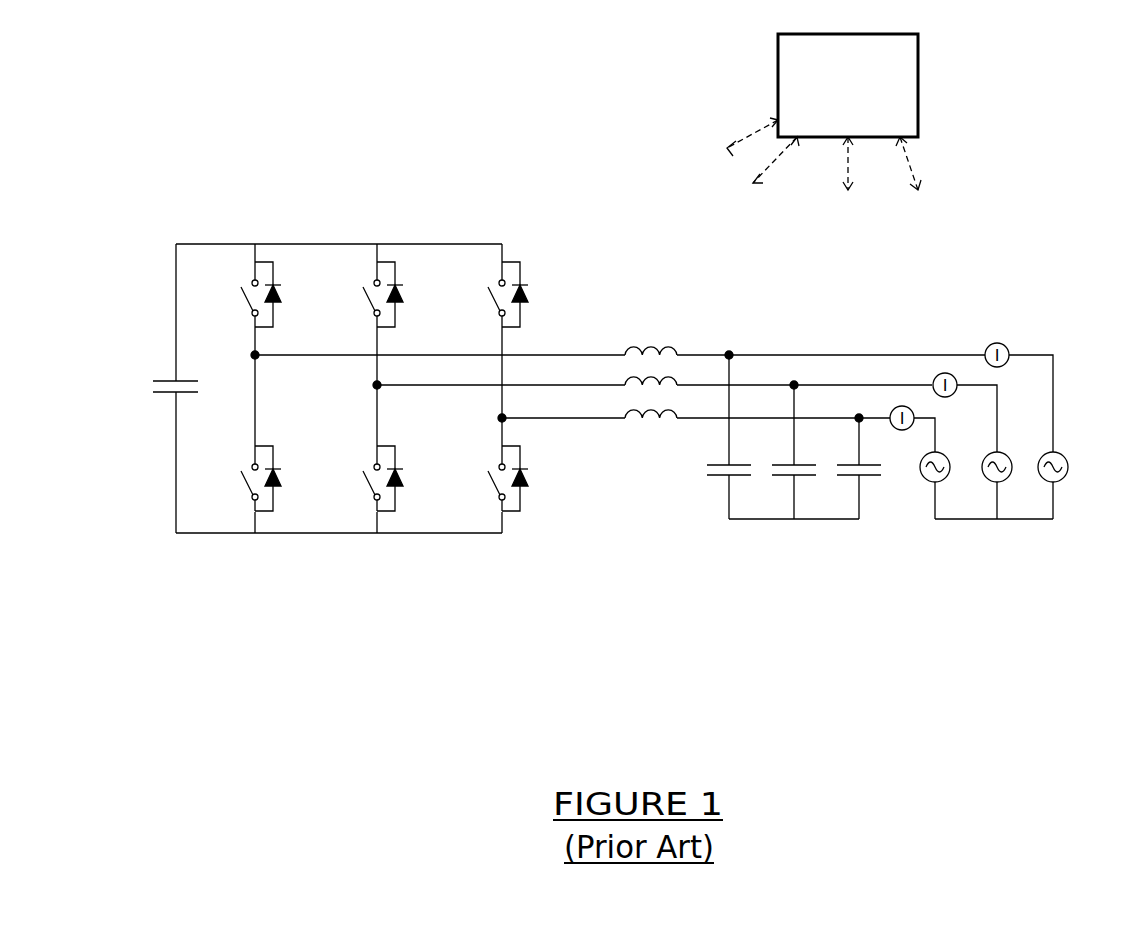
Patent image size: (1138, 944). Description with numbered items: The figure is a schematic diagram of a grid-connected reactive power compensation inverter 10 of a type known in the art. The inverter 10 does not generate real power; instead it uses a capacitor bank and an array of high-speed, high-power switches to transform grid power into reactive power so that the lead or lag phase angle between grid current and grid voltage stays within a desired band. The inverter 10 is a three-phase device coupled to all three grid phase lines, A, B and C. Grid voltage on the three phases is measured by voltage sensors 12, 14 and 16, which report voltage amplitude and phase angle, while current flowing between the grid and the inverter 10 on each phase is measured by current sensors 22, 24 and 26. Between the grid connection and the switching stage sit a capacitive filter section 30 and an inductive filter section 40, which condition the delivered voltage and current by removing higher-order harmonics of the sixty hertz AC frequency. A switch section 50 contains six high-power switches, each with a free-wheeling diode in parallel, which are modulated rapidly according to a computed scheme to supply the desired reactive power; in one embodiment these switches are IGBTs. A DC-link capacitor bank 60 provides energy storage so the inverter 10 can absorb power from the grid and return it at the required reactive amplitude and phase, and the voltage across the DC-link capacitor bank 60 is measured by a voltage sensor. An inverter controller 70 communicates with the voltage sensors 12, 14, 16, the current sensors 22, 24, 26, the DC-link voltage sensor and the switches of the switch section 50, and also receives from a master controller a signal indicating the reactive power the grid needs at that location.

The grid-connected reactive power compensation inverter 10 is at (955, 630).
The voltage sensor 12 is at (1063, 455).
The voltage sensor 14 is at (1007, 455).
The voltage sensor 16 is at (945, 455).
The current sensor 22 is at (986, 347).
The current sensor 24 is at (933, 378).
The current sensor 26 is at (890, 411).
The capacitive filter section 30 is at (681, 470).
The inductive filter section 40 is at (648, 291).
The switch section 50 is at (408, 200).
The DC-link capacitor bank 60 is at (152, 357).
The inverter controller 70 is at (778, 50).